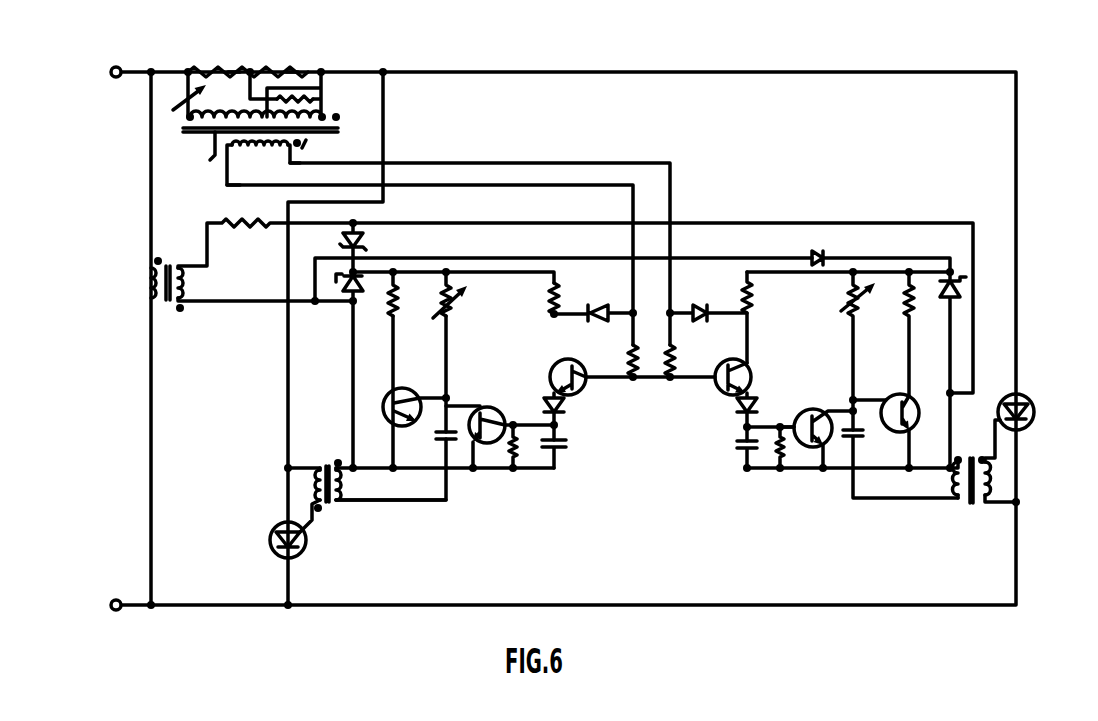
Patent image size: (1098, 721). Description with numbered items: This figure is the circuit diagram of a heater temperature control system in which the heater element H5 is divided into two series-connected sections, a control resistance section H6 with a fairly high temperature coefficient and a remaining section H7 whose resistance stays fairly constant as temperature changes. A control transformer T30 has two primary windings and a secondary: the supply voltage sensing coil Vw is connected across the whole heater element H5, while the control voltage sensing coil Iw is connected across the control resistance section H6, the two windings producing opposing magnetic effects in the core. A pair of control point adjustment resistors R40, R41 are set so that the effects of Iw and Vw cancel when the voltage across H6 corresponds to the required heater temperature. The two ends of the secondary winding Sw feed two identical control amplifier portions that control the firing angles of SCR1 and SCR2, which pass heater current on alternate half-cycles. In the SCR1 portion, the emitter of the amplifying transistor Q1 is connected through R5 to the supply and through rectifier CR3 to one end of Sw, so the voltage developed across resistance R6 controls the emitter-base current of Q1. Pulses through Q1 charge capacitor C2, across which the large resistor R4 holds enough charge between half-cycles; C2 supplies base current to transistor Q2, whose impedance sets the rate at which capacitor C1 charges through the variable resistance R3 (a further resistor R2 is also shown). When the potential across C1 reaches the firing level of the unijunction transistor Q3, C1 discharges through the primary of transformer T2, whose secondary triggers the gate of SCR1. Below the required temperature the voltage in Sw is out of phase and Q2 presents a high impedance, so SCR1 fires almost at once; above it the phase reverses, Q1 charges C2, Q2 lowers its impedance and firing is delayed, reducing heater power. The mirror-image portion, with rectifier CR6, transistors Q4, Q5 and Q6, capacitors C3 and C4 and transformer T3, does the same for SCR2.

The heater element H5 is at (212, 47).
The control resistance section H6 is at (292, 70).
The remaining section H7 is at (233, 70).
The control point adjustment resistor R40 is at (190, 88).
The control point adjustment resistor R41 is at (312, 96).
The control transformer T30 is at (284, 128).
The supply voltage sensing coil Vw is at (194, 152).
The control voltage sensing coil Iw is at (312, 152).
The secondary winding Sw is at (263, 163).
The resistor R2 is at (408, 294).
The variable resistance R3 is at (462, 295).
The resistor R4 is at (518, 460).
The resistor R5 is at (538, 298).
The resistance R6 is at (618, 358).
The rectifier CR3 is at (600, 306).
The rectifier CR6 is at (700, 306).
The amplifying transistor Q1 is at (554, 397).
The transistor Q2 is at (500, 427).
The unijunction transistor Q3 is at (414, 396).
The amplifying transistor Q4 is at (750, 395).
The transistor Q5 is at (816, 428).
The unijunction transistor Q6 is at (886, 422).
The capacitor C1 is at (431, 443).
The capacitor C2 is at (568, 451).
The capacitor C3 is at (900, 464).
The capacitor C4 is at (749, 447).
The transformer T2 is at (373, 499).
The transformer T3 is at (983, 476).
The silicon controlled rectifier SCR1 is at (259, 540).
The silicon controlled rectifier SCR2 is at (1044, 419).